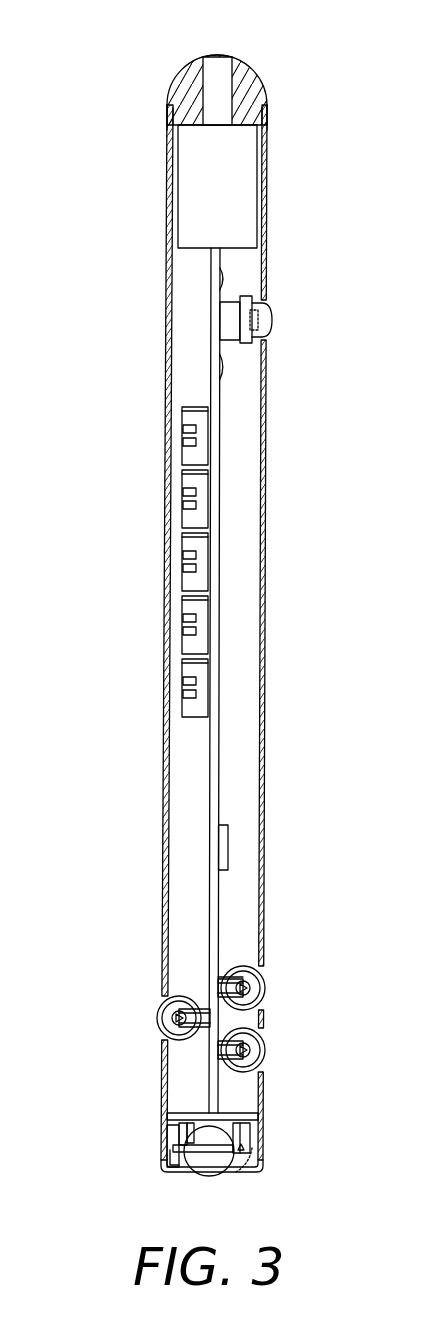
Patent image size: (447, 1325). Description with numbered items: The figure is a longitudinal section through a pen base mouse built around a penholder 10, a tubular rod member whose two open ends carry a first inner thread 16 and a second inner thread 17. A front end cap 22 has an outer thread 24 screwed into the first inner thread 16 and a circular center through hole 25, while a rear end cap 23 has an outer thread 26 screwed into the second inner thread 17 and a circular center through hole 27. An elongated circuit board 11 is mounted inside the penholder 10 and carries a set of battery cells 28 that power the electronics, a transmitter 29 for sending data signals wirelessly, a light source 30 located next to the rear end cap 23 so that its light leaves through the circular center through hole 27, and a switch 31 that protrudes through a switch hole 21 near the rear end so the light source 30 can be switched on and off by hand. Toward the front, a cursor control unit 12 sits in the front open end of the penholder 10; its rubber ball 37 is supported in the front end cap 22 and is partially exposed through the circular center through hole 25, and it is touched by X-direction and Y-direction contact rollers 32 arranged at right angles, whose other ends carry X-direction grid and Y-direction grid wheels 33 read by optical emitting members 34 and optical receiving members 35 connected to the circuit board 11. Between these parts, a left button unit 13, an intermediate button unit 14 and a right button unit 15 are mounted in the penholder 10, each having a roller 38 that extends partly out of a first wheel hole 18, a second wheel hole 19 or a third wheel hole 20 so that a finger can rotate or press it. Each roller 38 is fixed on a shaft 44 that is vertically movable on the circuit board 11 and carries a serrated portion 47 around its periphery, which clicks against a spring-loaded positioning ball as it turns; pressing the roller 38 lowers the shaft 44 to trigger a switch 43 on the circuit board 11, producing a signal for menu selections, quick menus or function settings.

The penholder 10 is at (263, 688).
The circuit board 11 is at (214, 755).
The cursor control unit 12 is at (206, 1129).
The left button unit 13 is at (300, 1066).
The intermediate button unit 14 is at (252, 933).
The right button unit 15 is at (126, 991).
The first inner thread 16 is at (255, 1130).
The second inner thread 17 is at (265, 117).
The first wheel hole 18 is at (258, 1068).
The second wheel hole 19 is at (262, 1006).
The third wheel hole 20 is at (163, 1000).
The switch hole 21 is at (262, 303).
The front end cap 22 is at (163, 1143).
The rear end cap 23 is at (180, 92).
The outer thread 24 is at (162, 1123).
The circular center through hole 25 is at (228, 1172).
The outer thread 26 is at (171, 118).
The circular center through hole 27 is at (218, 68).
The battery cells 28 is at (188, 482).
The transmitter 29 is at (228, 846).
The light source 30 is at (245, 175).
The switch 31 is at (270, 320).
The X-direction and Y-direction contact rollers 32 is at (209, 1153).
The X-direction grid and Y-direction grid wheels 33 is at (163, 1158).
The optical emitting members 34 is at (163, 1132).
The optical receiving members 35 is at (185, 1123).
The rubber ball 37 is at (170, 1172).
The roller 38 is at (173, 998).
The switch 43 is at (222, 977).
The shaft 44 is at (262, 968).
The serrated portion 47 is at (250, 987).